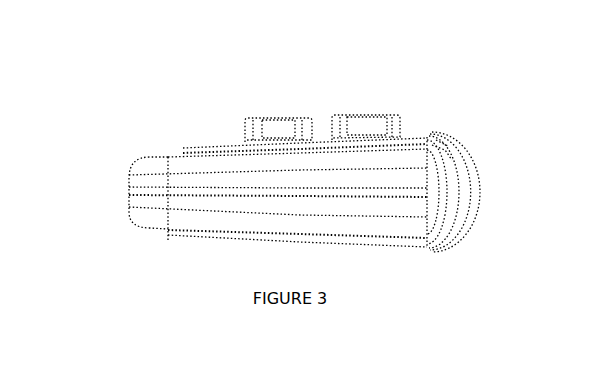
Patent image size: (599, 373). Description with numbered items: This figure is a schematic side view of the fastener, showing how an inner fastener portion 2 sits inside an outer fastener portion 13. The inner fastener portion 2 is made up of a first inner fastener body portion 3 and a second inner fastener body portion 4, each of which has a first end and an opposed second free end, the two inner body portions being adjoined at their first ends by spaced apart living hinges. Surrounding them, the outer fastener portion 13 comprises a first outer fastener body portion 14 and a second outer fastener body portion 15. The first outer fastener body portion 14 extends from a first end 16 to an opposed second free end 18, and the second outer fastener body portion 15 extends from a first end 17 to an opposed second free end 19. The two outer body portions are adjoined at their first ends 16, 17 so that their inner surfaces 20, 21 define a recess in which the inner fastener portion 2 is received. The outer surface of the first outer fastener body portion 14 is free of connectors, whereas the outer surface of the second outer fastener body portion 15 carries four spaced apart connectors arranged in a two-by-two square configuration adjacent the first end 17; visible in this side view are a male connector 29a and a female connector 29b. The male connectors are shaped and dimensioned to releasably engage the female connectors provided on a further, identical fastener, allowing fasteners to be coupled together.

The inner fastener portion 2 is at (106, 210).
The first inner fastener body portion 3 is at (333, 172).
The second inner fastener body portion 4 is at (375, 222).
The outer fastener portion 13 is at (413, 121).
The first outer fastener body portion 14 is at (287, 240).
The second outer fastener body portion 15 is at (237, 148).
The first end of first outer fastener body portion 16 is at (462, 213).
The first end of second outer fastener body portion 17 is at (443, 150).
The second free end of first outer fastener body portion 18 is at (162, 235).
The second free end of second outer fastener body portion 19 is at (178, 150).
The inner surface of first outer fastener body portion 20 is at (228, 232).
The inner surface of second outer fastener body portion 21 is at (207, 153).
The male connector 29a is at (363, 117).
The female connector 29b is at (278, 118).